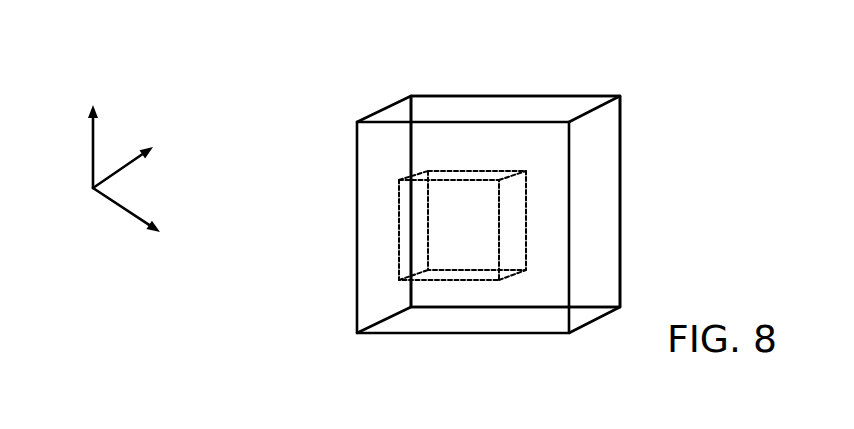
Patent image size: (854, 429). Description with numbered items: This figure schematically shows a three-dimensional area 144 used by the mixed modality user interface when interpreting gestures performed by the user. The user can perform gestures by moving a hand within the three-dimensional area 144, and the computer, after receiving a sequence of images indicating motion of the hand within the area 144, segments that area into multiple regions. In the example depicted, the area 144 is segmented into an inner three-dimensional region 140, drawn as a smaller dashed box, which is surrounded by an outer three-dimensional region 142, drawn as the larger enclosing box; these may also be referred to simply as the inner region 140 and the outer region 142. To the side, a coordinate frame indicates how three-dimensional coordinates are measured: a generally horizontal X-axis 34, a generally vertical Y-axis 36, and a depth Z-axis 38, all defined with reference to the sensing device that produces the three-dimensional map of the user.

The X-axis 34 is at (128, 214).
The Y-axis 36 is at (93, 147).
The Z-axis 38 is at (123, 163).
The inner 3D region 140 is at (399, 230).
The outer 3D region 142 is at (357, 150).
The 3D area 144 is at (693, 95).